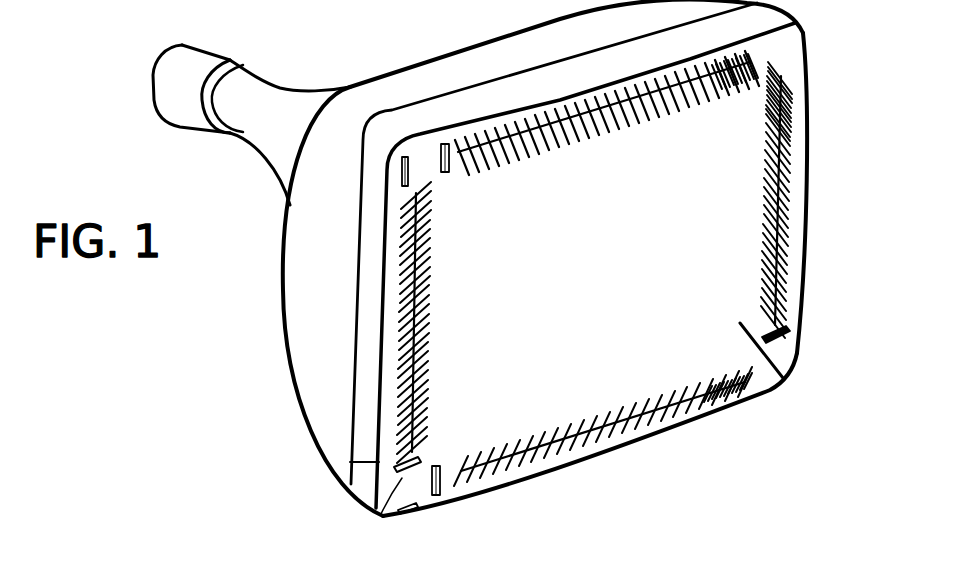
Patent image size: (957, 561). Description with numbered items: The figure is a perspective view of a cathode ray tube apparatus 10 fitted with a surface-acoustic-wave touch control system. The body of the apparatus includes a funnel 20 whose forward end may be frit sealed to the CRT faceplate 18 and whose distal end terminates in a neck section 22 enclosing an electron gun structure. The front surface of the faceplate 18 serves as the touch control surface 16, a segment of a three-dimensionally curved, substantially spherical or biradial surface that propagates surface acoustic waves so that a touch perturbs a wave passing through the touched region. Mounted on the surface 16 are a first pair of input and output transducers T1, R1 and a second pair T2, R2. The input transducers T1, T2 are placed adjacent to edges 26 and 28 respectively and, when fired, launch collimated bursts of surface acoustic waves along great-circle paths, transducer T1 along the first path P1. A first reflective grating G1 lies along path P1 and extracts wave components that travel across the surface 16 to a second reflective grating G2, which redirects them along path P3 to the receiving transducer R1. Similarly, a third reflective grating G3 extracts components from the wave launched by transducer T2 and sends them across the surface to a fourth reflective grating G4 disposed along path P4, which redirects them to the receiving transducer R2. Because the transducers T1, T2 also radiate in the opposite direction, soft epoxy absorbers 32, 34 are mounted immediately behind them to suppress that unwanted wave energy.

The cathode ray tube apparatus 10 is at (258, 379).
The touch control surface 16 is at (780, 378).
The CRT faceplate 18 is at (367, 407).
The funnel 20 is at (287, 208).
The neck section 22 is at (263, 82).
The edge 26 is at (487, 120).
The edge 28 is at (352, 462).
The absorber 32 is at (401, 168).
The absorber 34 is at (417, 513).
The first input surface wave transducer T1 is at (437, 150).
The second input surface wave transducer T2 is at (376, 512).
The first output surface wave transducer R1 is at (437, 496).
The second output surface wave transducer R2 is at (788, 338).
The first path P1 is at (644, 100).
The third path P3 is at (638, 413).
The fourth path P4 is at (788, 183).
The first reflective grating G1 is at (590, 128).
The second reflective grating G2 is at (625, 405).
The third reflective grating G3 is at (424, 303).
The fourth reflective grating G4 is at (775, 193).